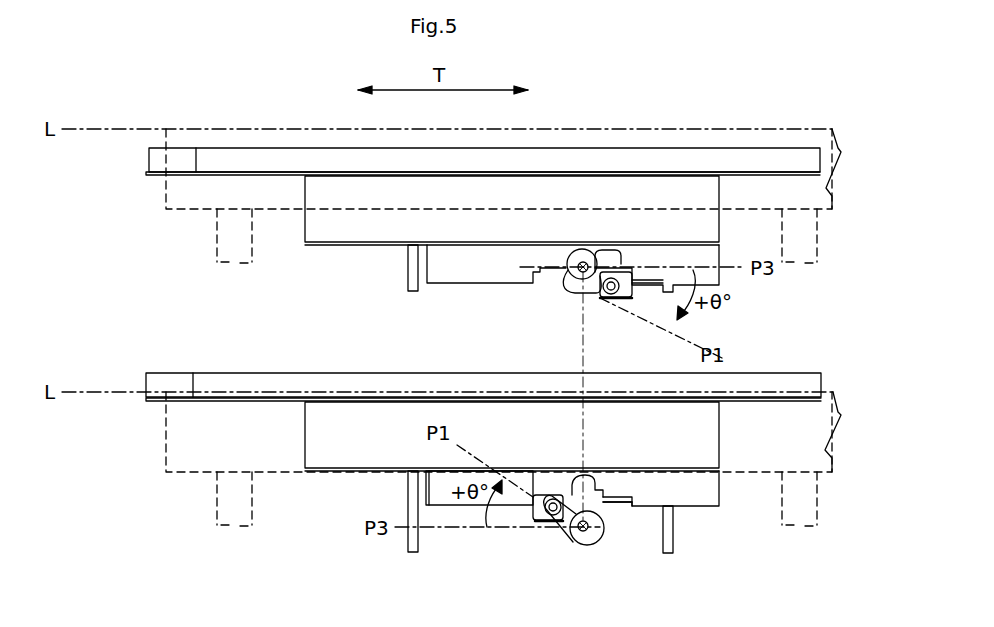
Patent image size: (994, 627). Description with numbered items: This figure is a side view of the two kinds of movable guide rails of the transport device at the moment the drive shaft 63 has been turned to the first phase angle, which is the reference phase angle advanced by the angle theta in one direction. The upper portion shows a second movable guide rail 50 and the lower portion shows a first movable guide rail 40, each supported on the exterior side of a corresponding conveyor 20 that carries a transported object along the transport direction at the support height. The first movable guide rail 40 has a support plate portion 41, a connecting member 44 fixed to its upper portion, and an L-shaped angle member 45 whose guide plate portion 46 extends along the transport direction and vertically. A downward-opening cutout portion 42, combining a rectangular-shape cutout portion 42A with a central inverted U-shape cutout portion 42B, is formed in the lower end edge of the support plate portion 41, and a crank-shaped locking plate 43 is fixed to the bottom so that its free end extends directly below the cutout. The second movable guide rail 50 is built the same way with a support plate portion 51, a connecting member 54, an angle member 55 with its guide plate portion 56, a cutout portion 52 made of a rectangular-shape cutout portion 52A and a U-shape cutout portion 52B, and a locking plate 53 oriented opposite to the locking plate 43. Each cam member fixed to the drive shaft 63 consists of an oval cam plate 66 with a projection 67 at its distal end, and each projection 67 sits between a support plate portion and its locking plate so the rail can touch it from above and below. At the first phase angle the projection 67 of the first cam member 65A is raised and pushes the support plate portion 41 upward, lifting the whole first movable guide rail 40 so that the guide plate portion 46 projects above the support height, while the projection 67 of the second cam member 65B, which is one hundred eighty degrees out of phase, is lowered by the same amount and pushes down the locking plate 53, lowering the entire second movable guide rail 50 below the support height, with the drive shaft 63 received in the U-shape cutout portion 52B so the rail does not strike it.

The conveyor 20 is at (196, 212).
The first movable guide rail 40 is at (439, 379).
The support plate portion 41 is at (426, 492).
The cutout portion 42 is at (645, 478).
The rectangular-shape cutout portion 42A is at (627, 498).
The U-shape cutout portion 42B is at (597, 488).
The locking plate 43 is at (533, 512).
The connecting member 44 is at (326, 462).
The angle member 45 is at (155, 402).
The guide plate portion 46 is at (262, 384).
The second movable guide rail 50 is at (430, 156).
The support plate portion 51 is at (458, 272).
The cutout portion 52 is at (650, 236).
The rectangular-shape cutout portion 52A is at (637, 283).
The U-shape cutout portion 52B is at (596, 258).
The locking plate 53 is at (658, 288).
The connecting member 54 is at (354, 230).
The angle member 55 is at (158, 175).
The guide plate portion 56 is at (305, 162).
The drive shaft 63 is at (569, 256).
The first cam member 65A is at (614, 533).
The second cam member 65B is at (569, 295).
The cam plate 66 is at (586, 274).
The projection 67 is at (613, 299).